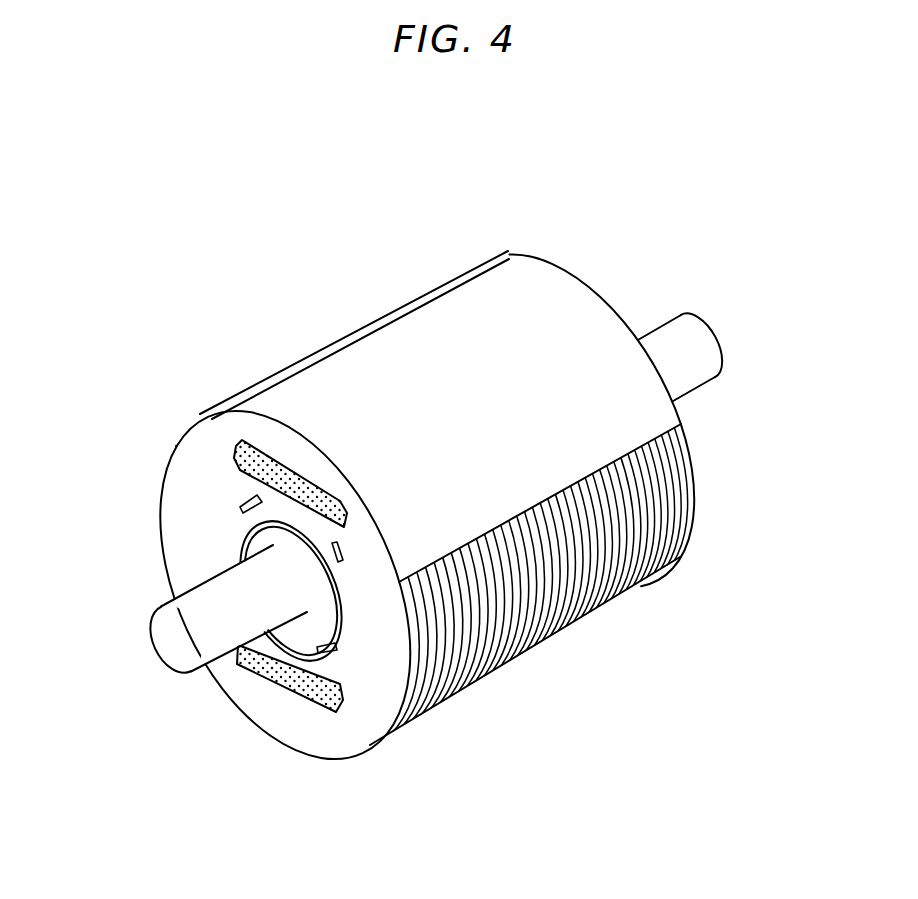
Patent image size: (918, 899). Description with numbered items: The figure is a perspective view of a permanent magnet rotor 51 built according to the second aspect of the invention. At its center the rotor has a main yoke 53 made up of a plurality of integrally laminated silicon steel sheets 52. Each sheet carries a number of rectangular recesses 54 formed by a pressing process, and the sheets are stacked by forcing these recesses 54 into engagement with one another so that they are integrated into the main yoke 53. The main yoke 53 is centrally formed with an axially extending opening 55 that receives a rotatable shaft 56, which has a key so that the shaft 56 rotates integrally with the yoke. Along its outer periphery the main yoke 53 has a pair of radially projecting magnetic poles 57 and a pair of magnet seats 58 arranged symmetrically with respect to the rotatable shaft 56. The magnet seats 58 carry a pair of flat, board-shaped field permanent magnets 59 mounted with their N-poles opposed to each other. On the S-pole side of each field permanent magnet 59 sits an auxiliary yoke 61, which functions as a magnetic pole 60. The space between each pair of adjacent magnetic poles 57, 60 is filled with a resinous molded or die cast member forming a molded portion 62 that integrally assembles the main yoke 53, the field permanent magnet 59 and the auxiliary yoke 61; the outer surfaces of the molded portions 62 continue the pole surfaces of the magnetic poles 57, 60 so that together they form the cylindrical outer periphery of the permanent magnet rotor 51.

The permanent magnet rotor 51 is at (604, 193).
The silicon steel sheets 52 is at (580, 607).
The main yoke 53 is at (544, 572).
The rectangular recesses 54 is at (238, 499).
The opening 55 is at (318, 680).
The rotatable shaft 56 is at (160, 641).
The magnetic poles 57 is at (172, 527).
The magnet seats 58 is at (237, 497).
The field permanent magnets 59 is at (262, 458).
The magnetic pole 60 is at (307, 455).
The auxiliary yokes 61 is at (420, 347).
The molded portion 62 is at (210, 440).